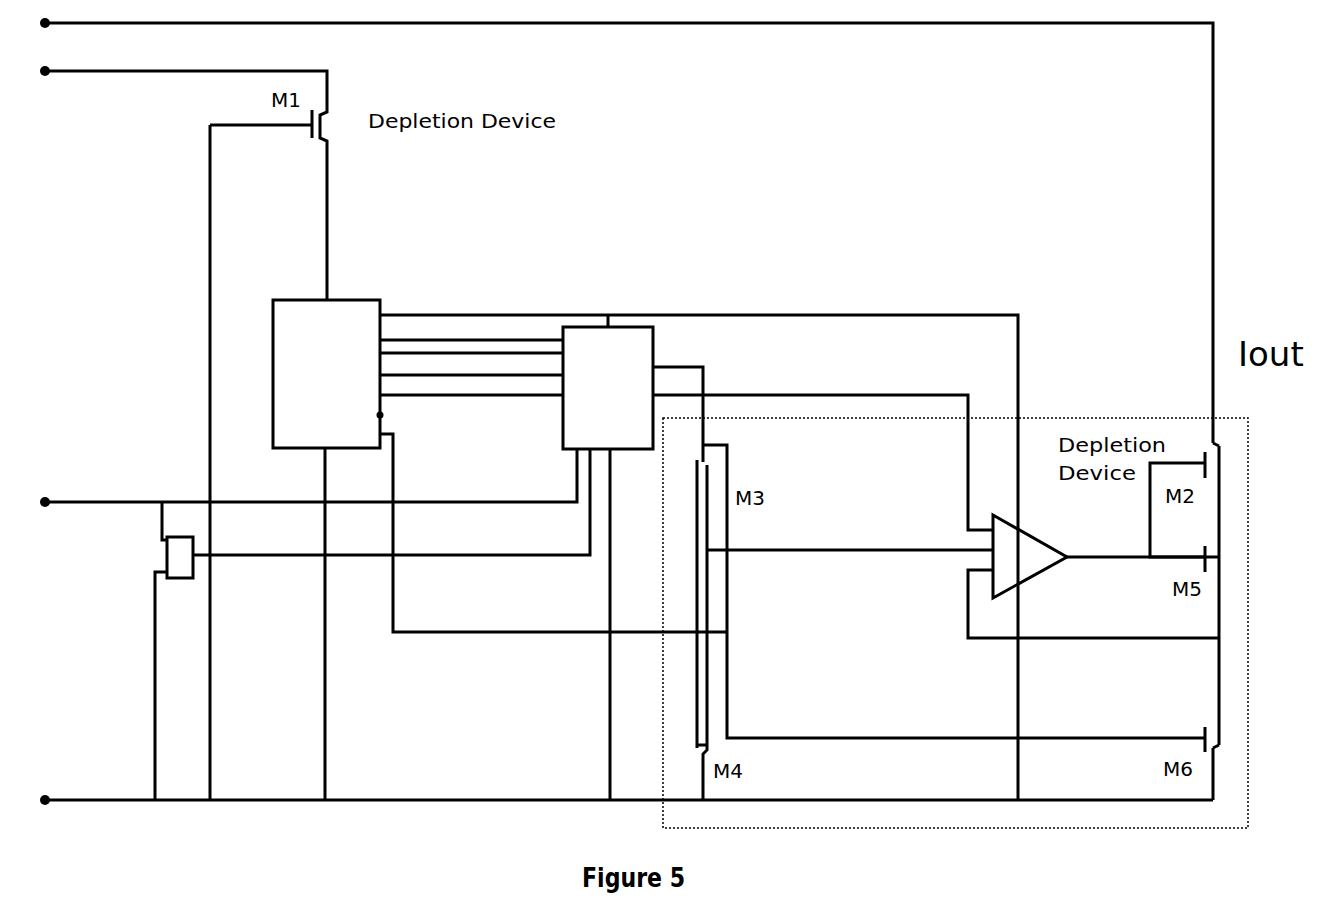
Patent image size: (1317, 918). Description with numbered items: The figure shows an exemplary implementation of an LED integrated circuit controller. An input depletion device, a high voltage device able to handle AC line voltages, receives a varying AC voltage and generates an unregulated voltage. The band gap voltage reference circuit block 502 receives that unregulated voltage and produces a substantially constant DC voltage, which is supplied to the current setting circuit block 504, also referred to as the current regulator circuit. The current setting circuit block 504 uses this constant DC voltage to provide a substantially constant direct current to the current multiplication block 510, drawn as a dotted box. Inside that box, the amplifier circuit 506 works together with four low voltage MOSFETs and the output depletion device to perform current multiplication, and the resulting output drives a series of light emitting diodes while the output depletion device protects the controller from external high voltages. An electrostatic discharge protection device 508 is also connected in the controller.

The band gap voltage reference circuit block 502 is at (340, 297).
The current setting circuit block 504 is at (632, 325).
The amplifier circuit 506 is at (1030, 562).
The electrostatic discharge protection device 508 is at (165, 548).
The current multiplication block 510 is at (1047, 418).